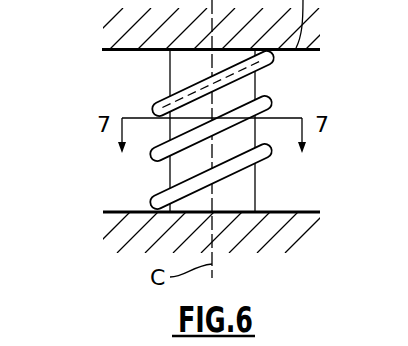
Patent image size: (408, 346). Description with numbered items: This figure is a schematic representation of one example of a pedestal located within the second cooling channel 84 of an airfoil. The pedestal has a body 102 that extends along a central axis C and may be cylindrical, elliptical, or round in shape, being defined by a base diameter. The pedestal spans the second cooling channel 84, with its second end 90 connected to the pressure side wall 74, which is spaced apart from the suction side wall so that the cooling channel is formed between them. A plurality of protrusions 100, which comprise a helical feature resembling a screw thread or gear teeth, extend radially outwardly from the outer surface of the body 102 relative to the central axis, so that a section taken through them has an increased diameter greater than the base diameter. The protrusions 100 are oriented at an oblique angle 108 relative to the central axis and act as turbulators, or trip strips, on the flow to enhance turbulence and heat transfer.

The pressure side wall 74 is at (293, 212).
The second cooling channel 84 is at (186, 127).
The second end 90 is at (238, 203).
The protrusions 100 is at (152, 207).
The body 102 is at (252, 170).
The oblique angle 108 is at (222, 86).